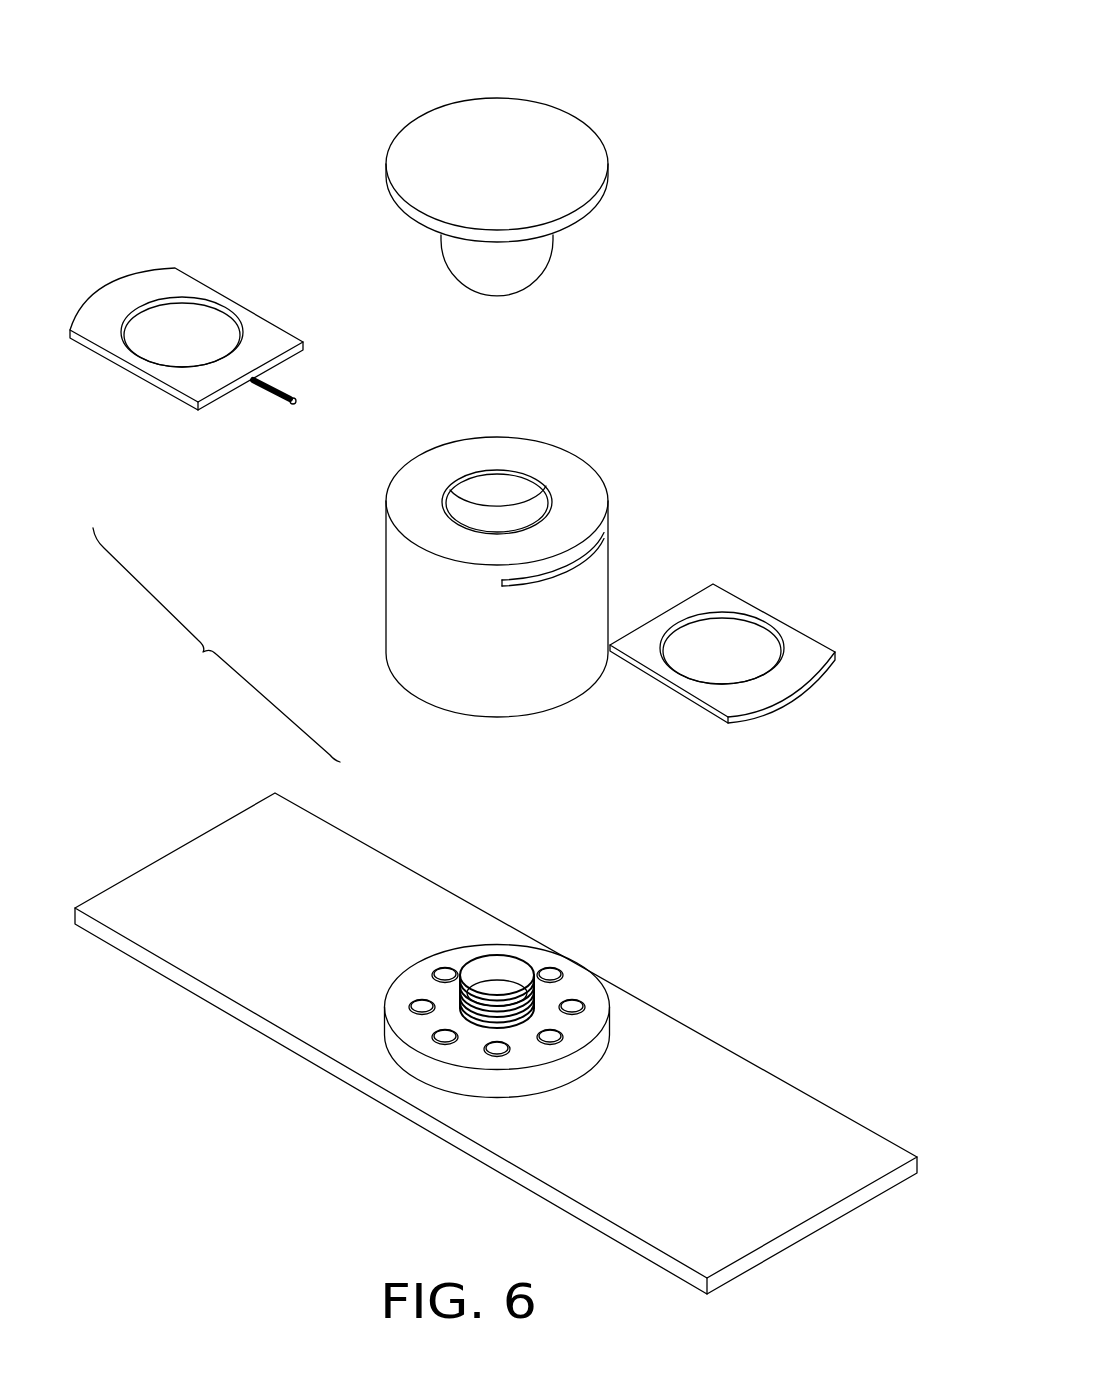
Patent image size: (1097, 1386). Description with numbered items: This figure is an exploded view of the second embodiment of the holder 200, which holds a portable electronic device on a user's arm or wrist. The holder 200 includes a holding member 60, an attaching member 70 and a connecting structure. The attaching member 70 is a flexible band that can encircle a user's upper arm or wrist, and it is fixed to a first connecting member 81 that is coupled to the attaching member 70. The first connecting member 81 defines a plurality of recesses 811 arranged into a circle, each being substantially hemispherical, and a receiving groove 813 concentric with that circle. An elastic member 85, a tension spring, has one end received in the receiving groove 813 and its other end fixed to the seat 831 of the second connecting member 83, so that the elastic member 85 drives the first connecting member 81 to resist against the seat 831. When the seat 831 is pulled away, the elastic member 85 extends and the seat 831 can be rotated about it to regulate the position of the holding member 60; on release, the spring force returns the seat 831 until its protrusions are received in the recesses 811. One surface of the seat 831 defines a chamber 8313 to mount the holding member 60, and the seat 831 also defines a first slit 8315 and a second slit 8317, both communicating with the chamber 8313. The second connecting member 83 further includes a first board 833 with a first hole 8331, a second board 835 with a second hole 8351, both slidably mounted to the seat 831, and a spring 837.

The holder 200 is at (588, 38).
The holding member 60 is at (565, 150).
The attaching member 70 is at (447, 1132).
The first connecting member 81 is at (488, 974).
The recesses 811 is at (573, 1000).
The receiving groove 813 is at (485, 993).
The elastic member 85 is at (502, 958).
The second connecting member 83 is at (216, 645).
The seat 831 is at (470, 552).
The chamber 8313 is at (508, 508).
The first slit 8315 is at (603, 543).
The second slit 8317 is at (457, 490).
The first board 833 is at (615, 670).
The first hole 8331 is at (753, 648).
The second board 835 is at (186, 365).
The second hole 8351 is at (197, 322).
The spring 837 is at (280, 397).